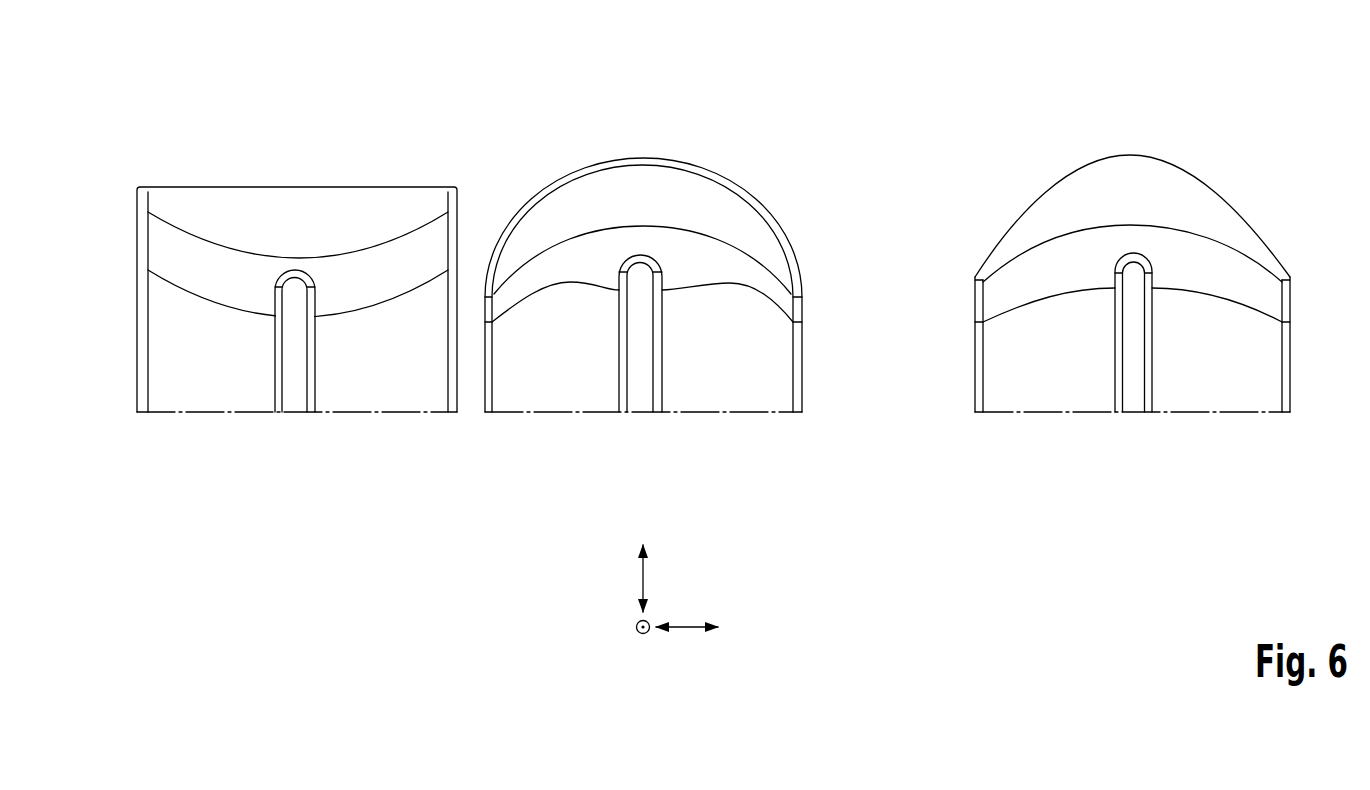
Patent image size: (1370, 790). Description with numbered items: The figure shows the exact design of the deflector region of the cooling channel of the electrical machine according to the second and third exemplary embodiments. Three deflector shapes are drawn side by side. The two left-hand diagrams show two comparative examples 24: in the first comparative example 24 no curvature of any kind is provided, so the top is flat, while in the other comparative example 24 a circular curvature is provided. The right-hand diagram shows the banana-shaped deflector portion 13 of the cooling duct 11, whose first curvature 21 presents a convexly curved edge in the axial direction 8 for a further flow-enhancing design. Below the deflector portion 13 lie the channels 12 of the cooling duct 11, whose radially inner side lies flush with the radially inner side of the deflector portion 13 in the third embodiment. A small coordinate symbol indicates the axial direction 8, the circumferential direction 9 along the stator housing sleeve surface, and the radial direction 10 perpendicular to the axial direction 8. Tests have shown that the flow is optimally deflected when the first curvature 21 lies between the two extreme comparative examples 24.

The comparative example 24 is at (390, 145).
The deflector portion 13 is at (1122, 302).
The first curvature 21 is at (1130, 157).
The channel 12 is at (1071, 395).
The cooling duct 11 is at (1010, 452).
The axial direction 8 is at (645, 578).
The circumferential direction 9 is at (695, 636).
The radial direction 10 is at (632, 627).